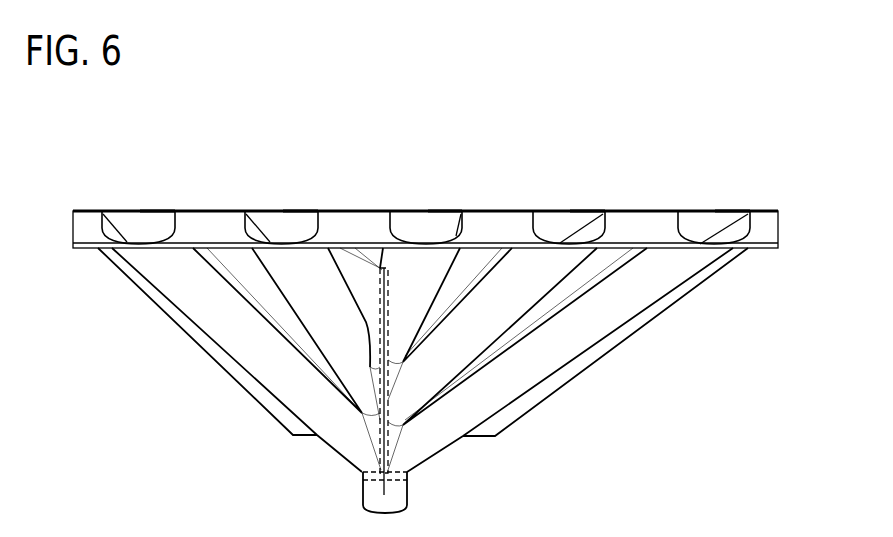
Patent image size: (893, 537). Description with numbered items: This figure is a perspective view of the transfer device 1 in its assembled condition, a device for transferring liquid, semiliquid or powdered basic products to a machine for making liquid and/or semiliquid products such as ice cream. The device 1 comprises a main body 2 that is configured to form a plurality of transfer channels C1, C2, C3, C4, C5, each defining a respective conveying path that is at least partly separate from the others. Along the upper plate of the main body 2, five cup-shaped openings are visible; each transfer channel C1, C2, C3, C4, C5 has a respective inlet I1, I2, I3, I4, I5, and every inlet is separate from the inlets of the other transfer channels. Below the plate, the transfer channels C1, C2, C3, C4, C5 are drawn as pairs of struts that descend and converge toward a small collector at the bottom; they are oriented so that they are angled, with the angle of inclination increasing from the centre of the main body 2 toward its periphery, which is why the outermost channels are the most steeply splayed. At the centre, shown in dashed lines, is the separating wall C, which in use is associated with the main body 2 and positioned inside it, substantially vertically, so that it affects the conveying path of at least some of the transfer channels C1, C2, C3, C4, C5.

The transfer device 1 is at (647, 137).
The main body 2 is at (602, 366).
The separating wall C is at (392, 328).
The transfer channel C1 is at (122, 211).
The transfer channel C2 is at (268, 211).
The transfer channel C3 is at (418, 211).
The transfer channel C4 is at (550, 211).
The transfer channel C5 is at (707, 211).
The inlet I1 is at (155, 211).
The inlet I2 is at (295, 211).
The inlet I3 is at (448, 211).
The inlet I4 is at (585, 211).
The inlet I5 is at (743, 211).